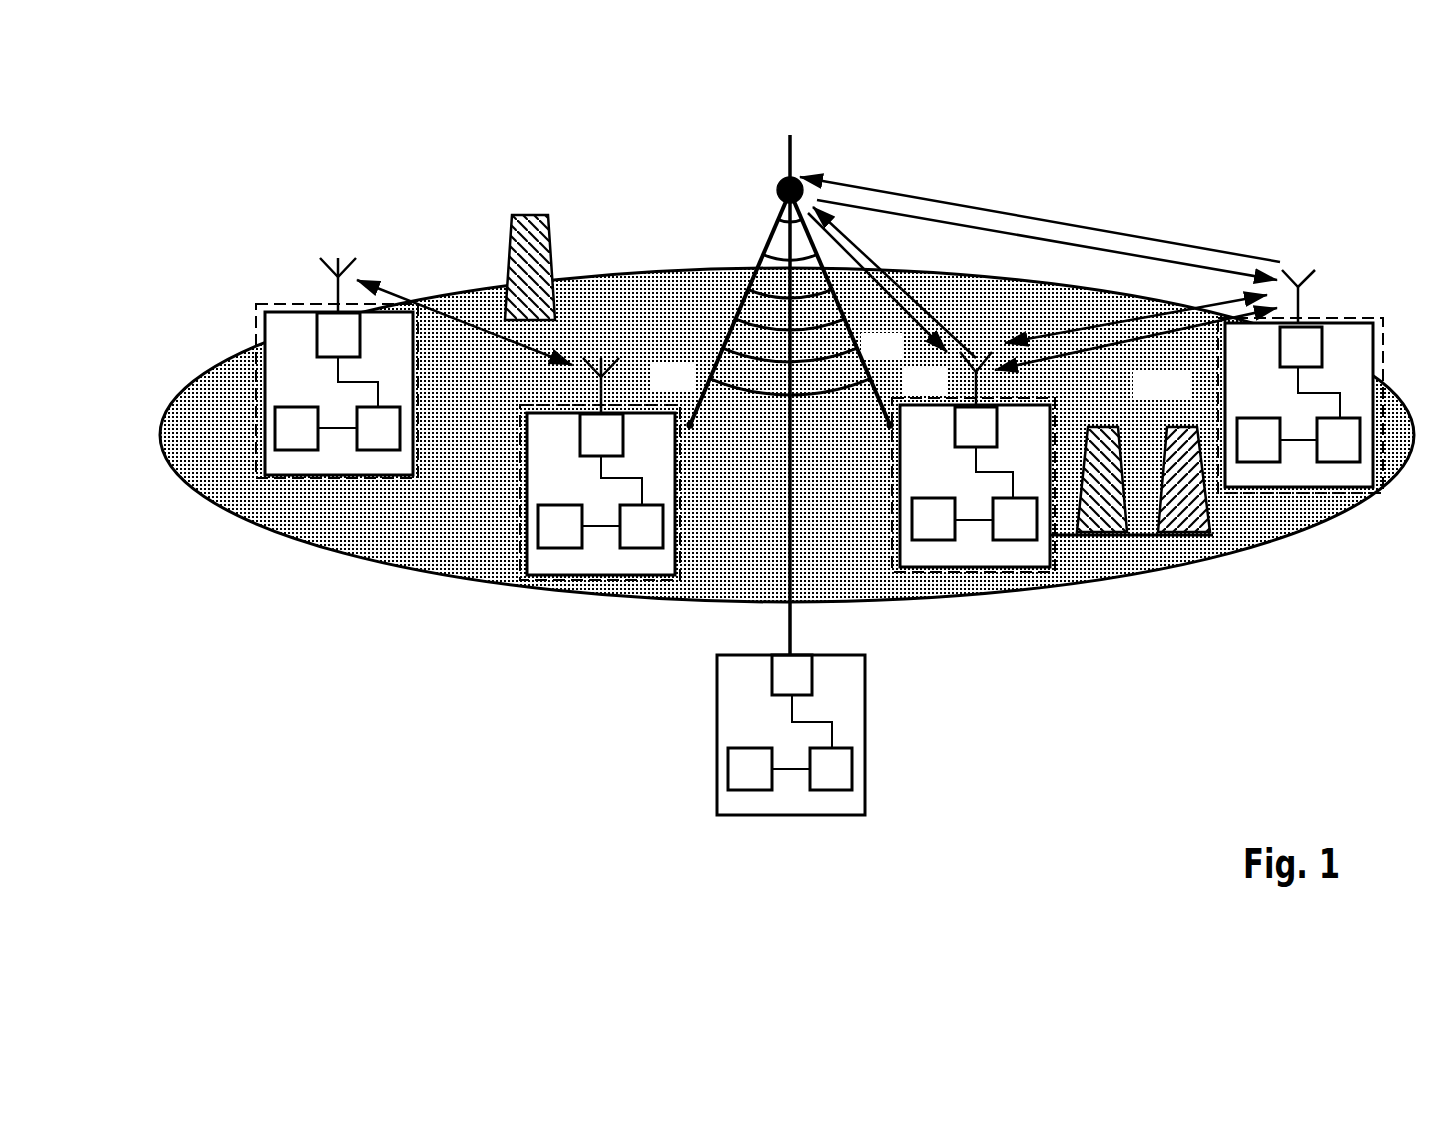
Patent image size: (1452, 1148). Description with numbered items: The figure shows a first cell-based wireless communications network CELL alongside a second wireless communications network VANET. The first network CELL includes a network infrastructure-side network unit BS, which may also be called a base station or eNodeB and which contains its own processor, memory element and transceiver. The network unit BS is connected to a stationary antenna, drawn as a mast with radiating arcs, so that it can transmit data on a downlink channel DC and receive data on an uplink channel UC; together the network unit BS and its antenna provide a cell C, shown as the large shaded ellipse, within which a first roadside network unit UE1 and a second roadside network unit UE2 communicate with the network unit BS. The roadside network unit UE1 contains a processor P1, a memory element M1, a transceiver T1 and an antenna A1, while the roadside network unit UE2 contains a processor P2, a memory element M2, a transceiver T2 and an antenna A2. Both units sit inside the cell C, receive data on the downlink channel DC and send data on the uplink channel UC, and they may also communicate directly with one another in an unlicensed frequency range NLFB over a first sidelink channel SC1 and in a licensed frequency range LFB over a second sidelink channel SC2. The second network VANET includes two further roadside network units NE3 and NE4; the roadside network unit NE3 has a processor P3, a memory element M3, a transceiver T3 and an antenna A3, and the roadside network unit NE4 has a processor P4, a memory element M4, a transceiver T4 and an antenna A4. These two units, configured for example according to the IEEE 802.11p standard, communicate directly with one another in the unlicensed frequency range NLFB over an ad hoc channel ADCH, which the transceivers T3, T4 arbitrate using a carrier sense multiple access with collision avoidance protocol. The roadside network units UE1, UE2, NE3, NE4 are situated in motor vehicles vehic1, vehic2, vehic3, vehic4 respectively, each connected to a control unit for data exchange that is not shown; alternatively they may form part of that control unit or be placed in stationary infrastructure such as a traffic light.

The first cell-based wireless communications network CELL is at (1091, 177).
The second wireless communications network VANET is at (368, 221).
The cell C is at (653, 270).
The uplink channel UC is at (897, 193).
The downlink channel DC is at (988, 228).
The first sidelink channel SC1 is at (1213, 303).
The second sidelink channel SC2 is at (1140, 333).
The ad hoc channel ADCH is at (397, 293).
The unlicensed frequency range NLFB is at (528, 213).
The licensed frequency range LFB is at (1190, 537).
The motor vehicle vehic1 is at (1007, 565).
The motor vehicle vehic2 is at (1330, 497).
The motor vehicle vehic3 is at (317, 480).
The motor vehicle vehic4 is at (570, 580).
The first roadside network unit UE1 is at (965, 553).
The second roadside network unit UE2 is at (1257, 477).
The roadside network unit NE3 is at (268, 337).
The roadside network unit NE4 is at (647, 562).
The antenna A1 is at (972, 378).
The antenna A2 is at (1305, 307).
The antenna A3 is at (335, 298).
The antenna A4 is at (612, 385).
The transceiver T1 is at (984, 452).
The transceiver T2 is at (1310, 372).
The transceiver T3 is at (347, 360).
The transceiver T4 is at (611, 459).
The memory element M1 is at (952, 519).
The memory element M2 is at (1277, 440).
The memory element M3 is at (316, 428).
The memory element M4 is at (579, 526).
The processor P1 is at (1015, 519).
The processor P2 is at (1338, 440).
The processor P3 is at (378, 428).
The processor P4 is at (641, 526).
The network infrastructure-side network unit BS is at (803, 807).